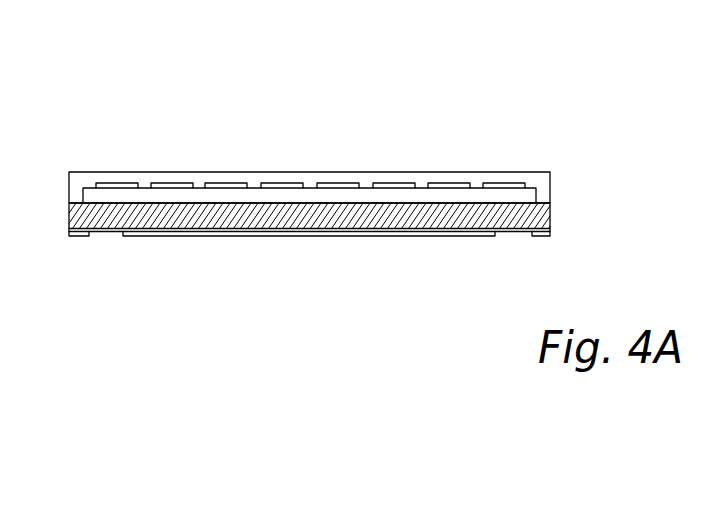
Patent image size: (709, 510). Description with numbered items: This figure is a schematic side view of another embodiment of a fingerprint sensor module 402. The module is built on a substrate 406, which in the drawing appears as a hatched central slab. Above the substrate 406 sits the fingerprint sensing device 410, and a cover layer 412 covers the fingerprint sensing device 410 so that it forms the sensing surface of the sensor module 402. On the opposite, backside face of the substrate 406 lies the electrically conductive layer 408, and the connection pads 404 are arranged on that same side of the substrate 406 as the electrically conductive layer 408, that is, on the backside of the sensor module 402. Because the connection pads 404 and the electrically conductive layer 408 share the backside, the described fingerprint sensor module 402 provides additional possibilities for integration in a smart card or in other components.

The fingerprint sensor module 402 is at (298, 118).
The connection pads 404 is at (538, 236).
The substrate 406 is at (335, 215).
The electrically conductive layer 408 is at (252, 236).
The fingerprint sensing device 410 is at (534, 193).
The cover layer 412 is at (96, 172).